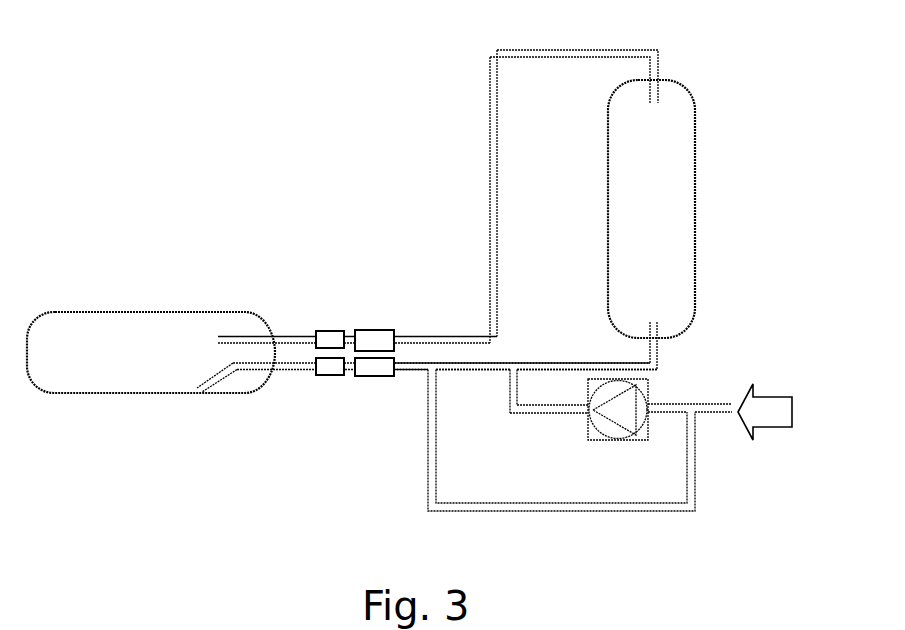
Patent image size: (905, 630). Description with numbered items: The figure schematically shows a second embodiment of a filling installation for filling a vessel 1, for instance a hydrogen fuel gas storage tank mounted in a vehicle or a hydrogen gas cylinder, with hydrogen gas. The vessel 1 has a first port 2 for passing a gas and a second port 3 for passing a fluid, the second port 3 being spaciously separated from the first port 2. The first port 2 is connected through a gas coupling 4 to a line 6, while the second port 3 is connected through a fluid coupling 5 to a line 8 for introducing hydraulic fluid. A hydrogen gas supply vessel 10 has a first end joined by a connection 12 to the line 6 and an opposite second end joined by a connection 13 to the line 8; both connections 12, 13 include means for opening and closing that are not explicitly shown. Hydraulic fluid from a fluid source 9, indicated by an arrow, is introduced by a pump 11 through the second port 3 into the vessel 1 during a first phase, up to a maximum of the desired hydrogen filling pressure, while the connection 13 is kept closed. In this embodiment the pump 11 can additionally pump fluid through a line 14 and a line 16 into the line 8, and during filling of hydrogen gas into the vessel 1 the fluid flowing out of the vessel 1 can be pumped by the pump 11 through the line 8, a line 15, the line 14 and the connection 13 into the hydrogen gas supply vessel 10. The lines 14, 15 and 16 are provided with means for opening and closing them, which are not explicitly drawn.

The vessel 1 is at (75, 312).
The first port 2 is at (332, 330).
The second port 3 is at (328, 377).
The gas coupling 4 is at (385, 330).
The fluid coupling 5 is at (372, 378).
The line 6 is at (497, 48).
The line 8 is at (414, 366).
The fluid source 9 is at (763, 407).
The hydrogen gas supply vessel 10 is at (703, 128).
The pump 11 is at (648, 395).
The connection 12 is at (607, 63).
The connection 13 is at (648, 348).
The line 14 is at (557, 414).
The line 15 is at (557, 510).
The line 16 is at (498, 366).